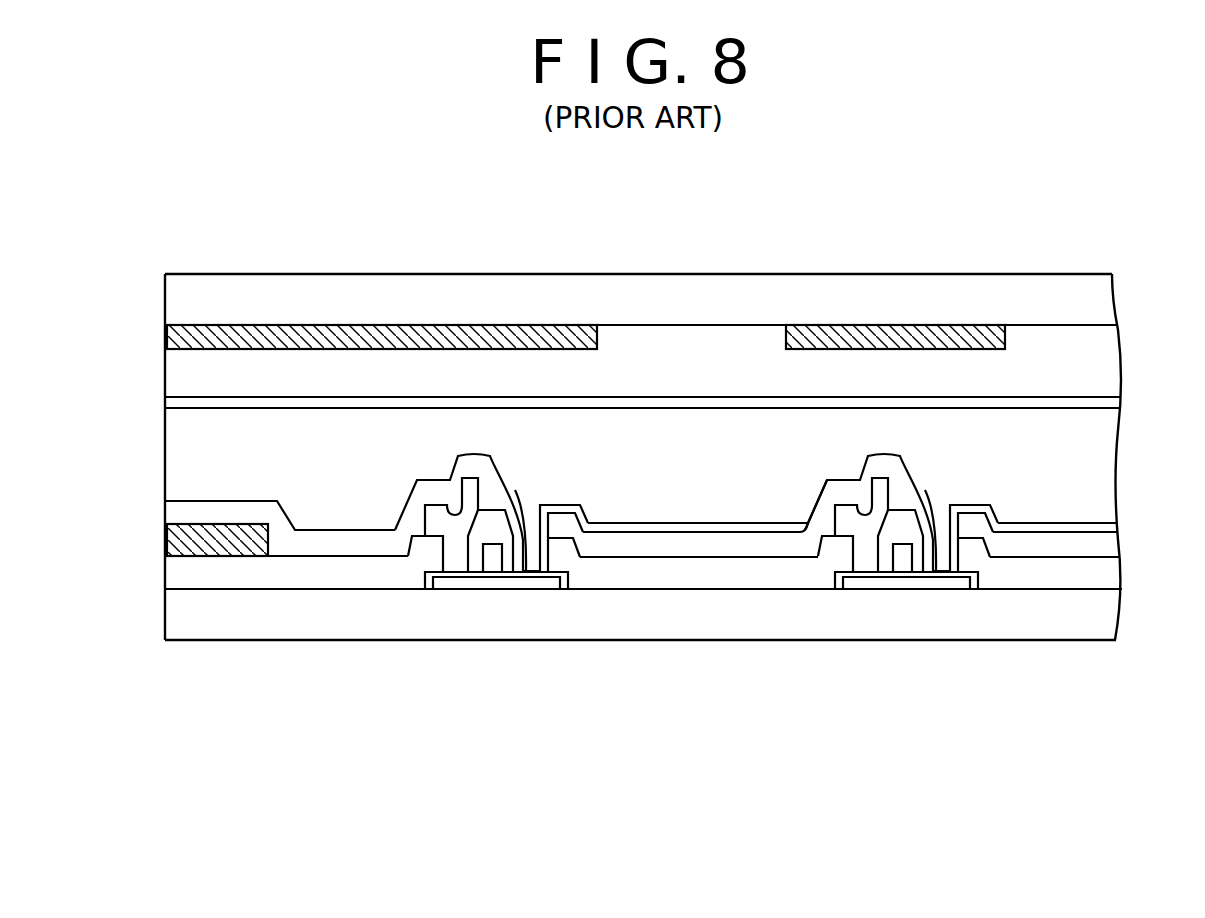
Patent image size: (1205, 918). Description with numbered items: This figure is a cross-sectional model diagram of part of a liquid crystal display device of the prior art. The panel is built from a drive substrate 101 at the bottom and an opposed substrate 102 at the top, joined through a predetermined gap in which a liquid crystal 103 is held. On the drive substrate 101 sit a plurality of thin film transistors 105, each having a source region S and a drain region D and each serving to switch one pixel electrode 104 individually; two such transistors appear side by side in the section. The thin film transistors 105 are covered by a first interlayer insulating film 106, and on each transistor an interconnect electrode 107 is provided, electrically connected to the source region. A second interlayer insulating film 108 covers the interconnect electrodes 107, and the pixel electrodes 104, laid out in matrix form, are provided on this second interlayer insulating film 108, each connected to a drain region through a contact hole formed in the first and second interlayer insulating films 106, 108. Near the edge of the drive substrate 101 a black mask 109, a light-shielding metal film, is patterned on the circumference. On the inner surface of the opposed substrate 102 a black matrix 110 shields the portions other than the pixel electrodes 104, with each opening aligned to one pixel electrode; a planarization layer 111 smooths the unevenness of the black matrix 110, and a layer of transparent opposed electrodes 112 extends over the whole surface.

The drive substrate 101 is at (880, 613).
The opposed substrate 102 is at (658, 290).
The liquid crystal 103 is at (1090, 465).
The pixel electrode 104 is at (565, 505).
The thin film transistor 105 is at (495, 600).
The first interlayer insulating film 106 is at (702, 575).
The interconnect electrode 107 is at (452, 549).
The second interlayer insulating film 108 is at (678, 547).
The black mask 109 is at (167, 540).
The black matrix 110 is at (388, 325).
The planarization layer 111 is at (748, 340).
The transparent opposed electrode 112 is at (167, 402).